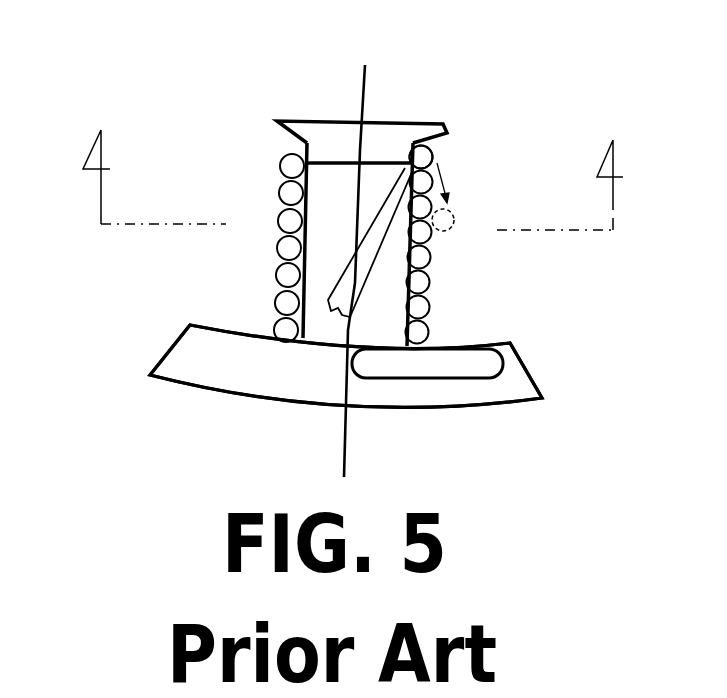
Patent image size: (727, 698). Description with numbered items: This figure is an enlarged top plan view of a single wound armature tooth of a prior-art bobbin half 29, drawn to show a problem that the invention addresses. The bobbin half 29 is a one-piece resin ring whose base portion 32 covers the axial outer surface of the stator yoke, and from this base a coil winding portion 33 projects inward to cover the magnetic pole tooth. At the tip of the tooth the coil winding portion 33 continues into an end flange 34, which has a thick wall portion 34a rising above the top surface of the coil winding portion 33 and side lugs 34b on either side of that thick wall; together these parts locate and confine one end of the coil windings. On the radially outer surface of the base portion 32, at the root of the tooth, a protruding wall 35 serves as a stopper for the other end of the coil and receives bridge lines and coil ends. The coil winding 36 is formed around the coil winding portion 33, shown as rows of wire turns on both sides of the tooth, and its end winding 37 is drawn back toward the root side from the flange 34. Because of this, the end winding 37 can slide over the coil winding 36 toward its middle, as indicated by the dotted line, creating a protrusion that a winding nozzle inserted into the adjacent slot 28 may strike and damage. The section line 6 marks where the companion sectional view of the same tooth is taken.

The section line 6- 6 is at (349, 180).
The slot 28 is at (470, 223).
The bobbin half 29 is at (193, 388).
The base portion 32 is at (256, 373).
The coil winding portion 33 is at (271, 285).
The end flange 34 is at (384, 120).
The thick wall portion 34a is at (282, 181).
The side lugs 34b is at (287, 117).
The protruding wall 35 is at (478, 380).
The coil winding 36 is at (433, 297).
The end winding 37 is at (443, 143).